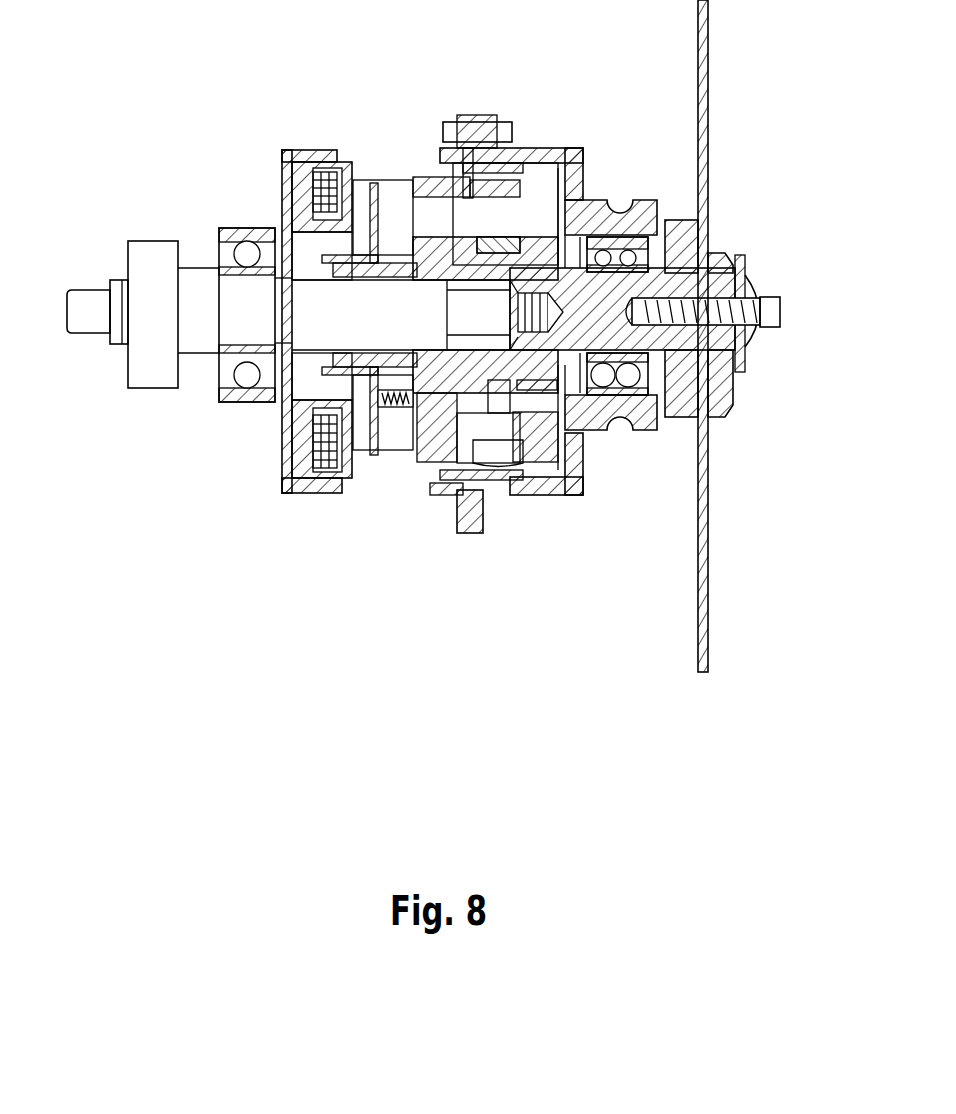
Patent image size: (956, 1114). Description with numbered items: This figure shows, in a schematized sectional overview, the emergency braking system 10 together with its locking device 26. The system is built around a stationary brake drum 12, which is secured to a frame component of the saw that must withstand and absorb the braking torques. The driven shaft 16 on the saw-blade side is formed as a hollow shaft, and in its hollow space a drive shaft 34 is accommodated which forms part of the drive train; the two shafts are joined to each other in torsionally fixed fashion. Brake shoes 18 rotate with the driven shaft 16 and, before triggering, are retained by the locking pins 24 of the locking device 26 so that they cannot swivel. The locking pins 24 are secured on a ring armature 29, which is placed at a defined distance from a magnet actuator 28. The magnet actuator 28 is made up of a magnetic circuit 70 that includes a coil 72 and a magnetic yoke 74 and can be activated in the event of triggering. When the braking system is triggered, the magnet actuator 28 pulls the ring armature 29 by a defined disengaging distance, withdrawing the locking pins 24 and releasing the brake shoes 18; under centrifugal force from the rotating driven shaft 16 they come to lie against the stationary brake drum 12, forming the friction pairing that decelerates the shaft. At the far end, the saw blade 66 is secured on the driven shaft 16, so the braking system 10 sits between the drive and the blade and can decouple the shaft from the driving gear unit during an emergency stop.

The emergency braking system 10 is at (582, 552).
The brake drum 12 is at (557, 148).
The driven shaft 16 is at (713, 282).
The brake shoes 18 is at (437, 178).
The locking pins 24 is at (403, 412).
The locking device 26 is at (303, 517).
The magnet actuator 28 is at (282, 467).
The ring armature 29 is at (373, 455).
The drive shaft 34 is at (203, 340).
The saw blade 66 is at (708, 115).
The magnetic circuit 70 is at (268, 170).
The coil 72 is at (310, 152).
The magnetic yoke 74 is at (347, 467).